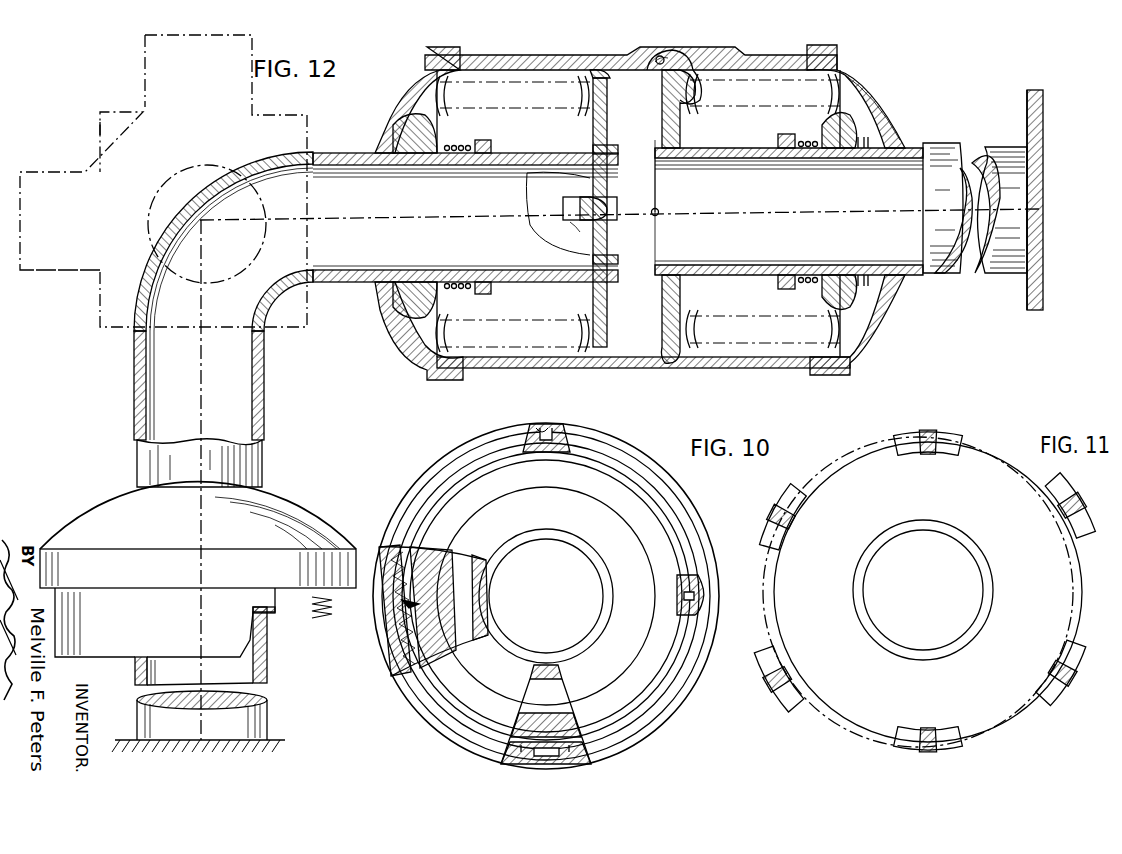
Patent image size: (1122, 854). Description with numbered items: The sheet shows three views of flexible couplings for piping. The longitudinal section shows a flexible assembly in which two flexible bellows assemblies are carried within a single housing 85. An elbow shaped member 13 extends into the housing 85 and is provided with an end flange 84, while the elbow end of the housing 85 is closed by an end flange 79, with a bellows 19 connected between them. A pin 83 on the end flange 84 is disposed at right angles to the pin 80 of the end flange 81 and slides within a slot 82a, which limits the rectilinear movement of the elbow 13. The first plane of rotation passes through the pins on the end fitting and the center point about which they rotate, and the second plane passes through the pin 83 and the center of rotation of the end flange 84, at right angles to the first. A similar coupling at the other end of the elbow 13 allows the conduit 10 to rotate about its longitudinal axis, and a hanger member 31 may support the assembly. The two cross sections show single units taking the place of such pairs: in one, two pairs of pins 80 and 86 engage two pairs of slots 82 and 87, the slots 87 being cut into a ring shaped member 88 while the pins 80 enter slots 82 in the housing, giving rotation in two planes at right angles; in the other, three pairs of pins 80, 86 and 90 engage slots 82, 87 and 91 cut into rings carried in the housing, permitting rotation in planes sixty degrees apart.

In FIG. 12, the conduit 10 is at (748, 262).
In FIG. 12, the elbow shaped member 13 is at (343, 282).
In FIG. 12, the bellows 19 is at (522, 108).
In FIG. 12, the hanger member 31 is at (88, 275).
In FIG. 12, the end flange 79 is at (878, 104).
In FIG. 12, the pin 80 is at (676, 58).
In FIG. 10, the pin 80 is at (556, 424).
In FIG. 11, the pin 80 is at (930, 433).
In FIG. 12, the end flange 81 is at (681, 128).
In FIG. 12, the slot 82 is at (661, 55).
In FIG. 10, the slot 82 is at (545, 427).
In FIG. 11, the slot 82 is at (909, 432).
In FIG. 12, the slot 82a is at (583, 221).
In FIG. 12, the pin 83 is at (593, 203).
In FIG. 12, the end flange 84 is at (608, 116).
In FIG. 12, the housing 85 is at (612, 56).
In FIG. 10, the pin 86 is at (407, 605).
In FIG. 11, the pin 86 is at (785, 674).
In FIG. 10, the slot 87 is at (404, 592).
In FIG. 11, the slot 87 is at (783, 693).
In FIG. 10, the ring shaped member 88 is at (409, 635).
In FIG. 11, the pin 90 is at (778, 512).
In FIG. 11, the slot 91 is at (790, 500).